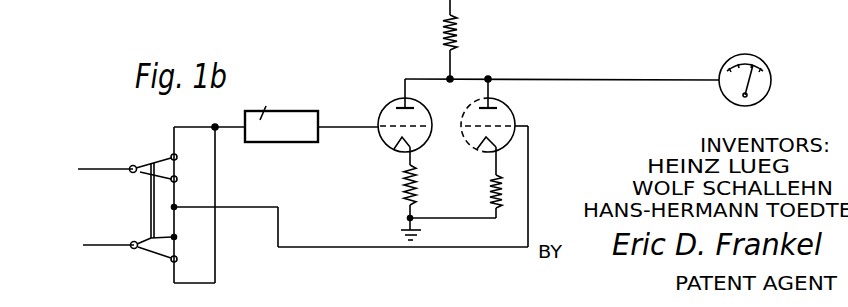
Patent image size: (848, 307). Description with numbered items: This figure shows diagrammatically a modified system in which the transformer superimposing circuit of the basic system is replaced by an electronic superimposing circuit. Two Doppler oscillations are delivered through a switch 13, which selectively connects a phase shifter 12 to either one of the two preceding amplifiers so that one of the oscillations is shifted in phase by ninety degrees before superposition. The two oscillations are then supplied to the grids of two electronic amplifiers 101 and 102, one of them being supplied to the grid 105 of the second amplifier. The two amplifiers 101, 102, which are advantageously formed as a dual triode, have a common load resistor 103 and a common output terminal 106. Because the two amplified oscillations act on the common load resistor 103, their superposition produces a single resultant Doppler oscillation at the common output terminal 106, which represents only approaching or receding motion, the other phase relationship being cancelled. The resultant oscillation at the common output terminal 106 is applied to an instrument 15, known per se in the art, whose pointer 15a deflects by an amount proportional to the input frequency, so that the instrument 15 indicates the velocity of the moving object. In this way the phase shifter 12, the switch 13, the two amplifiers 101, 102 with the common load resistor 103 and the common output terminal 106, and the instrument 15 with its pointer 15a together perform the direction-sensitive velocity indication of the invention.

The phase shifter 12 is at (288, 114).
The switch 13 is at (161, 203).
The instrument 15 is at (768, 97).
The pointer 15a is at (780, 78).
The electronic amplifier 101 is at (386, 101).
The electronic amplifier 102 is at (515, 113).
The common load resistor 103 is at (461, 31).
The grid 105 is at (474, 129).
The common output terminal 106 is at (489, 79).